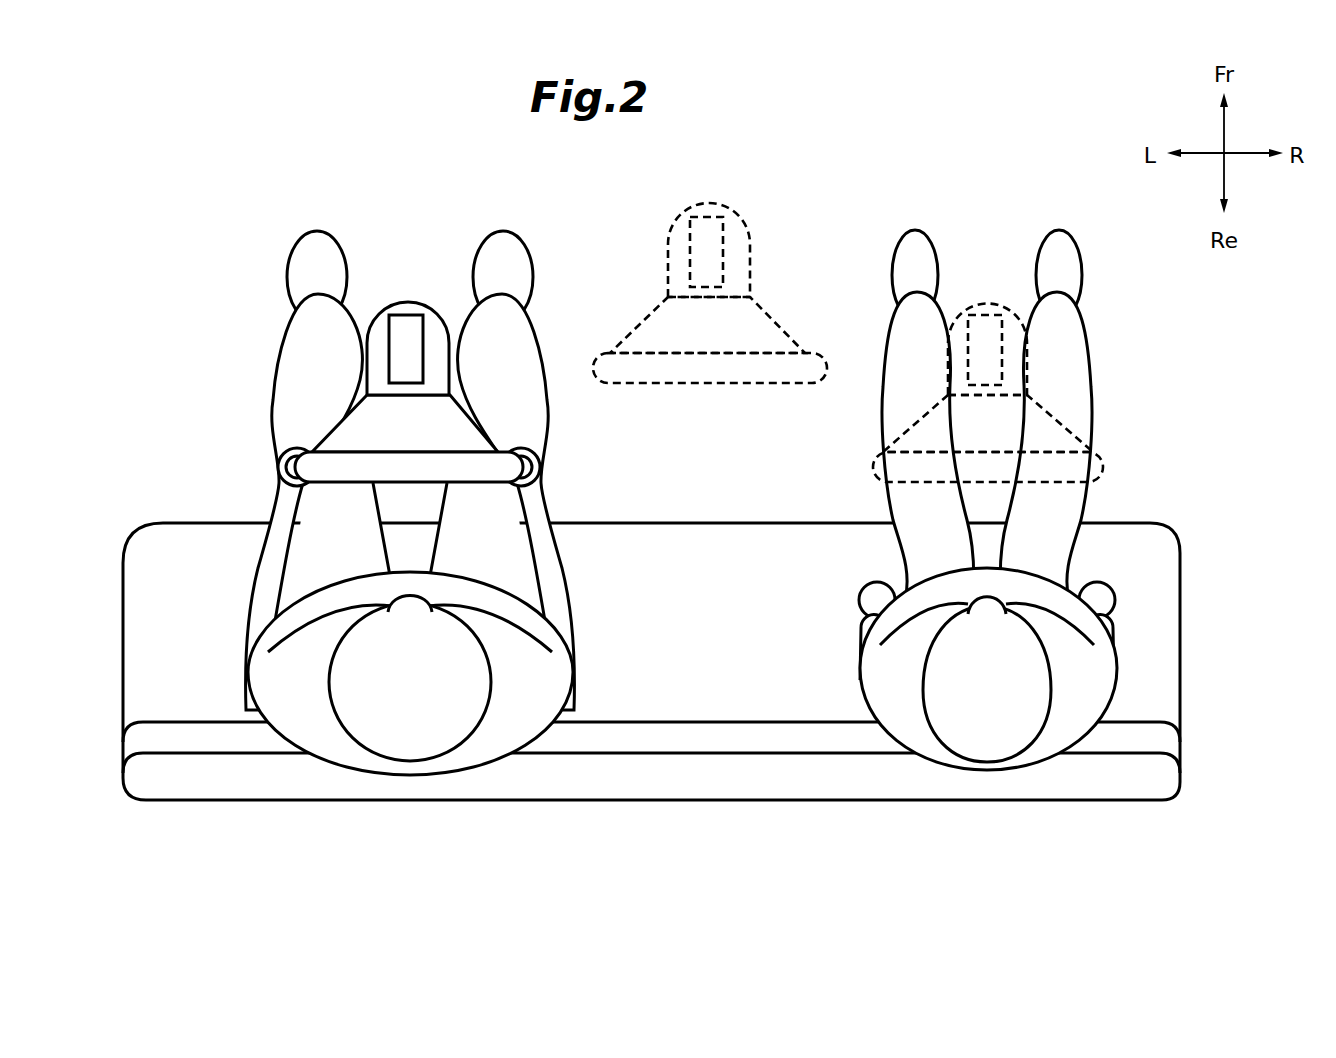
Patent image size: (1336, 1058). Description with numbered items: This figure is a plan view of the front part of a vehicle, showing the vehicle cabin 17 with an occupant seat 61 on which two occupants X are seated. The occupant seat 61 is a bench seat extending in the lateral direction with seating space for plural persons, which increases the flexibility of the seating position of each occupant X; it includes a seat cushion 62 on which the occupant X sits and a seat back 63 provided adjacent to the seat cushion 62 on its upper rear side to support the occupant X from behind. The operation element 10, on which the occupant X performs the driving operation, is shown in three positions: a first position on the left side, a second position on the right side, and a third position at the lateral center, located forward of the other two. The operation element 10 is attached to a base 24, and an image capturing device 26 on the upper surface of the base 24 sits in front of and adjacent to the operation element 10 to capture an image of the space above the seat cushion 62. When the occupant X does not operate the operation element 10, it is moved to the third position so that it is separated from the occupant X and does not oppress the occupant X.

The operation element 10 is at (767, 308).
The vehicle cabin 17 is at (736, 482).
The base 24 is at (763, 262).
The image capturing device 26 is at (423, 350).
The occupant seat 61 is at (160, 480).
The seat cushion 62 is at (205, 521).
The seat back 63 is at (760, 803).
The occupant X is at (245, 699).